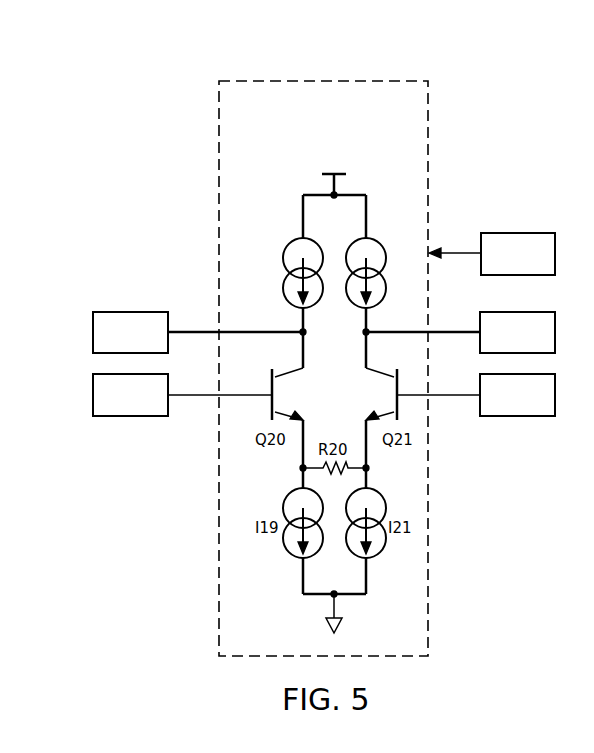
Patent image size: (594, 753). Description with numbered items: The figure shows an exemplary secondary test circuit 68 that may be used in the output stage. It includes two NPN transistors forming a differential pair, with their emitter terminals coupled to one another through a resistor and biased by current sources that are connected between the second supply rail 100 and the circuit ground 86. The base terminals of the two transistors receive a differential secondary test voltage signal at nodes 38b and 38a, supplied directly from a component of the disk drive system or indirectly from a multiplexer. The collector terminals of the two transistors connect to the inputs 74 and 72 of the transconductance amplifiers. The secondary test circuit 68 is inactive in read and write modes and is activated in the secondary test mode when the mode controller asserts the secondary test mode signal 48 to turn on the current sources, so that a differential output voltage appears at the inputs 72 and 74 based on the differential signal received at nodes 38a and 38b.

The secondary test circuit 68 is at (270, 77).
The second supply rail 100 is at (302, 216).
The secondary test mode signal 48 is at (451, 251).
The input INN 74 is at (199, 330).
The input INP 72 is at (449, 330).
The node 38b is at (200, 398).
The node 38a is at (449, 398).
The circuit ground 86 is at (320, 597).